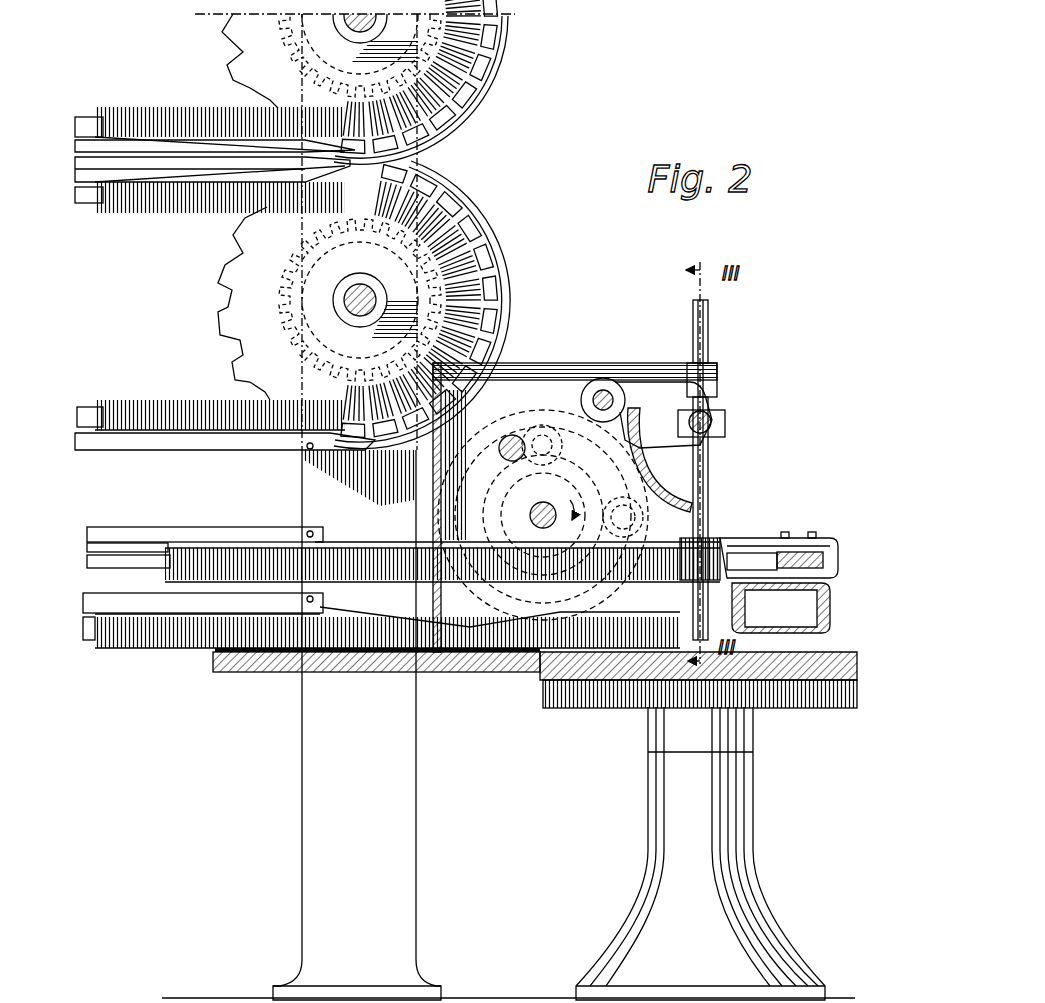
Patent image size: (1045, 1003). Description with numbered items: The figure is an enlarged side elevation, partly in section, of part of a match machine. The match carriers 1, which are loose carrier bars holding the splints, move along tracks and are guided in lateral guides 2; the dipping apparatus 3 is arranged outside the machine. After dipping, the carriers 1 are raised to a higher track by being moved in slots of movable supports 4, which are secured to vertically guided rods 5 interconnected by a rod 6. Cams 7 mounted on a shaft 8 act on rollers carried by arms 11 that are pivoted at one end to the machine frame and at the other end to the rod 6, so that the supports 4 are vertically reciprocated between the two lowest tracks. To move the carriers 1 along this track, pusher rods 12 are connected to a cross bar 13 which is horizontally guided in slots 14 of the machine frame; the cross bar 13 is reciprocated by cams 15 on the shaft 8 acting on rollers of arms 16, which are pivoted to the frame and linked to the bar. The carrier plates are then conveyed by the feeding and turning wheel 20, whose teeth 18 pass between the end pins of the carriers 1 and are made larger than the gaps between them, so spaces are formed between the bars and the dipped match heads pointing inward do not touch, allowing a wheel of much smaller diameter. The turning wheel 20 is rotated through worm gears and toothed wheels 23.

The match carriers 1 is at (470, 118).
The lateral guides 2 is at (85, 118).
The dipping apparatus 3 is at (490, 676).
The movable supports 4 is at (718, 530).
The vertically guided rods 5 is at (707, 459).
The rod 6 is at (715, 420).
The cams 7 is at (567, 438).
The shaft 8 is at (533, 515).
The arms 11 is at (655, 442).
The pusher rods 12 is at (752, 552).
The cross bar 13 is at (800, 558).
The slots 14 is at (785, 536).
The cams 15 is at (525, 684).
The arms 16 is at (635, 530).
The teeth 18 is at (235, 43).
The feeding and turning wheel 20 is at (483, 70).
The toothed wheels 23 is at (303, 28).